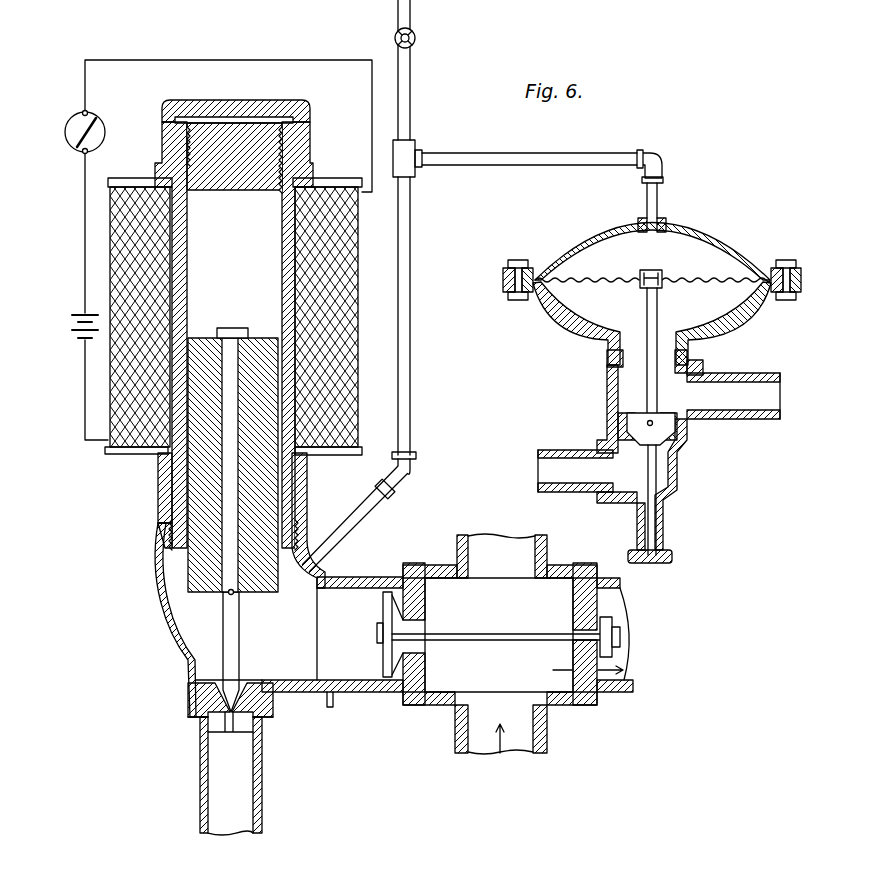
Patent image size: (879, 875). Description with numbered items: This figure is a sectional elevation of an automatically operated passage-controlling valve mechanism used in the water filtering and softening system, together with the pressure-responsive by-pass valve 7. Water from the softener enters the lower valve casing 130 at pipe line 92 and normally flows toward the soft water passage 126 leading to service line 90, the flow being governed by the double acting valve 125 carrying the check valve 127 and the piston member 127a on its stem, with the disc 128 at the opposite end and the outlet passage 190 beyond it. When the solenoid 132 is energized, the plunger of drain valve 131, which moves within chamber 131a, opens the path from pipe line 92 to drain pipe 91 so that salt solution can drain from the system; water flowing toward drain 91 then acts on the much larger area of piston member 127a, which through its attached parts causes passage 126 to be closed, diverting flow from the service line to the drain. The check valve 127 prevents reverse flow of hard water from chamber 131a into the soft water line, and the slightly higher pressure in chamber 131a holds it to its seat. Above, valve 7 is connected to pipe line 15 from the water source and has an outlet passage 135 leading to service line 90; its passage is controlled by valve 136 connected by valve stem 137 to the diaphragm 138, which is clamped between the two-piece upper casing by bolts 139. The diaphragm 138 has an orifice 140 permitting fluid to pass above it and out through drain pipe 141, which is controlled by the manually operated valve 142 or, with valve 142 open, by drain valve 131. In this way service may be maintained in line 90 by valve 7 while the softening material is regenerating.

The manually operated valve 142 is at (416, 40).
The drain pipe 141 is at (496, 160).
The orifice 140 is at (670, 278).
The bolts 139 is at (783, 266).
The diaphragm 138 is at (615, 282).
The valve stem 137 is at (650, 348).
The valve 136 is at (633, 416).
The valve 7 is at (684, 442).
The pipe line 15 is at (758, 412).
The service line 90 is at (545, 491).
The outlet passage 135 is at (596, 482).
The valve casing 130 is at (460, 556).
The outlet passage 190 is at (614, 580).
The valve disc 128 is at (606, 607).
The passage 126 is at (575, 630).
The check valve 127 is at (398, 617).
The double acting valve 125 is at (470, 638).
The solenoid 132 is at (345, 173).
The chamber 131a is at (284, 634).
The drain valve 131 is at (228, 642).
The piston member 127a is at (385, 678).
The drain pipe 91 is at (262, 766).
The pipe line 92 is at (545, 736).